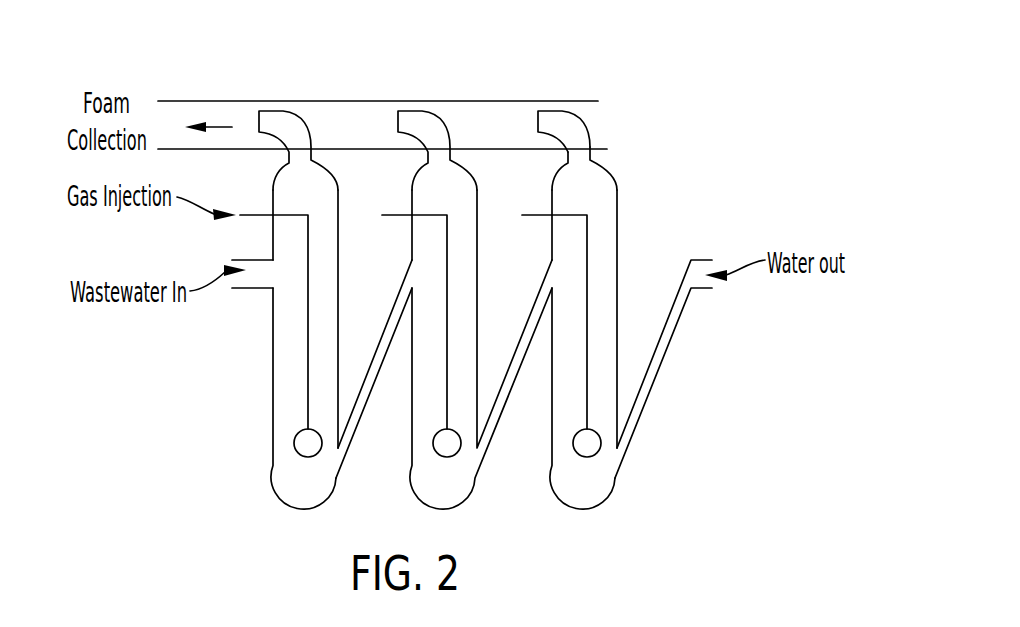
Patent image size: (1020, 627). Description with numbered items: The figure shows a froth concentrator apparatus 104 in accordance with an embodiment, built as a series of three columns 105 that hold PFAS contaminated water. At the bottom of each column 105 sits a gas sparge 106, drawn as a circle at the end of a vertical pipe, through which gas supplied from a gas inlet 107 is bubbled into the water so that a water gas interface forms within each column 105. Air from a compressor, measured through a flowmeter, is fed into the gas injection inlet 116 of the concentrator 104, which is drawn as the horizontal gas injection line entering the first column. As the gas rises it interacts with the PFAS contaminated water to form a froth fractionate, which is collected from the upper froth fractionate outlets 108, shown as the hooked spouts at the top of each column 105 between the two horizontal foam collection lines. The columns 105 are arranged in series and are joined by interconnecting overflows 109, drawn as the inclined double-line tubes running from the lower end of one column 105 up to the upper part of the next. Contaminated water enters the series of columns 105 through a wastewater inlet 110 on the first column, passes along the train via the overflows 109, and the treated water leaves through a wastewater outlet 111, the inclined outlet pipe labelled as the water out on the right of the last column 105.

The froth concentrator apparatus 104 is at (645, 112).
The column 105 is at (613, 224).
The gas sparge 106 is at (577, 457).
The gas inlet 107 is at (585, 412).
The upper froth fractionate outlet 108 is at (546, 118).
The interconnecting overflow 109 is at (355, 430).
The wastewater inlet 110 is at (245, 289).
The wastewater outlet 111 is at (697, 290).
The gas injection inlet 116 is at (243, 217).